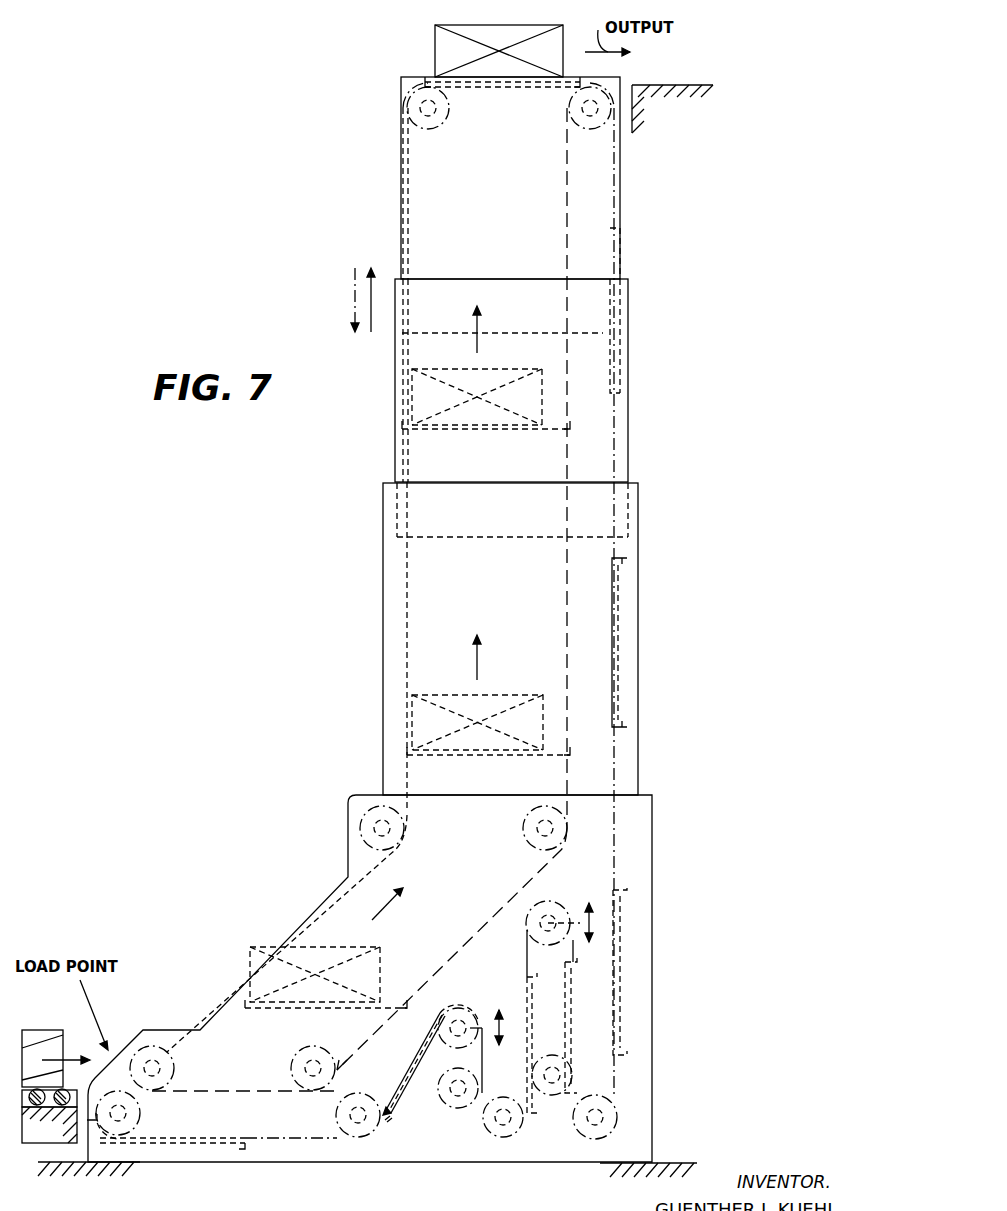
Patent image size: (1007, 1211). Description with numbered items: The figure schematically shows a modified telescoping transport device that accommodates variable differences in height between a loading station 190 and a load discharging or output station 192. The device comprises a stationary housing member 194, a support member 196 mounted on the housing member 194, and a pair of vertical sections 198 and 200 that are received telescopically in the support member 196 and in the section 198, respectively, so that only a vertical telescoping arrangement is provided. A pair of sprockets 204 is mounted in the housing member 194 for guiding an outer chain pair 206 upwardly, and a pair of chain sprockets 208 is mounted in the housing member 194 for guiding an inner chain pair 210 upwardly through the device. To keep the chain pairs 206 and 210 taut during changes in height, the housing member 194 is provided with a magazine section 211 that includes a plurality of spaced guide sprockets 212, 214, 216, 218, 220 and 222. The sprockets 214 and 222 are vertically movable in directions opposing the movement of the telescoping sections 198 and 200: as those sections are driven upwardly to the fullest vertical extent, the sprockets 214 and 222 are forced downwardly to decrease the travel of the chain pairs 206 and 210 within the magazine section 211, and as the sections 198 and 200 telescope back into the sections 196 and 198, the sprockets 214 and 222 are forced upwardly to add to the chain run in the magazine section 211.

The loading station 190 is at (60, 1145).
The load discharging or output station 192 is at (662, 88).
The stationary housing member 194 is at (652, 912).
The support member 196 is at (638, 542).
The vertical section 198 is at (628, 365).
The vertical section 200 is at (622, 197).
The sprockets 204 is at (363, 822).
The outer chain pair 206 is at (407, 603).
The chain sprockets 208 is at (525, 822).
The inner chain pair 210 is at (567, 598).
The magazine section 211 is at (418, 1147).
The guide sprocket 212 is at (617, 1117).
The guide sprocket 214 is at (552, 904).
The guide sprocket 216 is at (552, 1098).
The guide sprocket 218 is at (503, 1140).
The guide sprocket 220 is at (462, 1112).
The guide sprocket 222 is at (458, 1010).